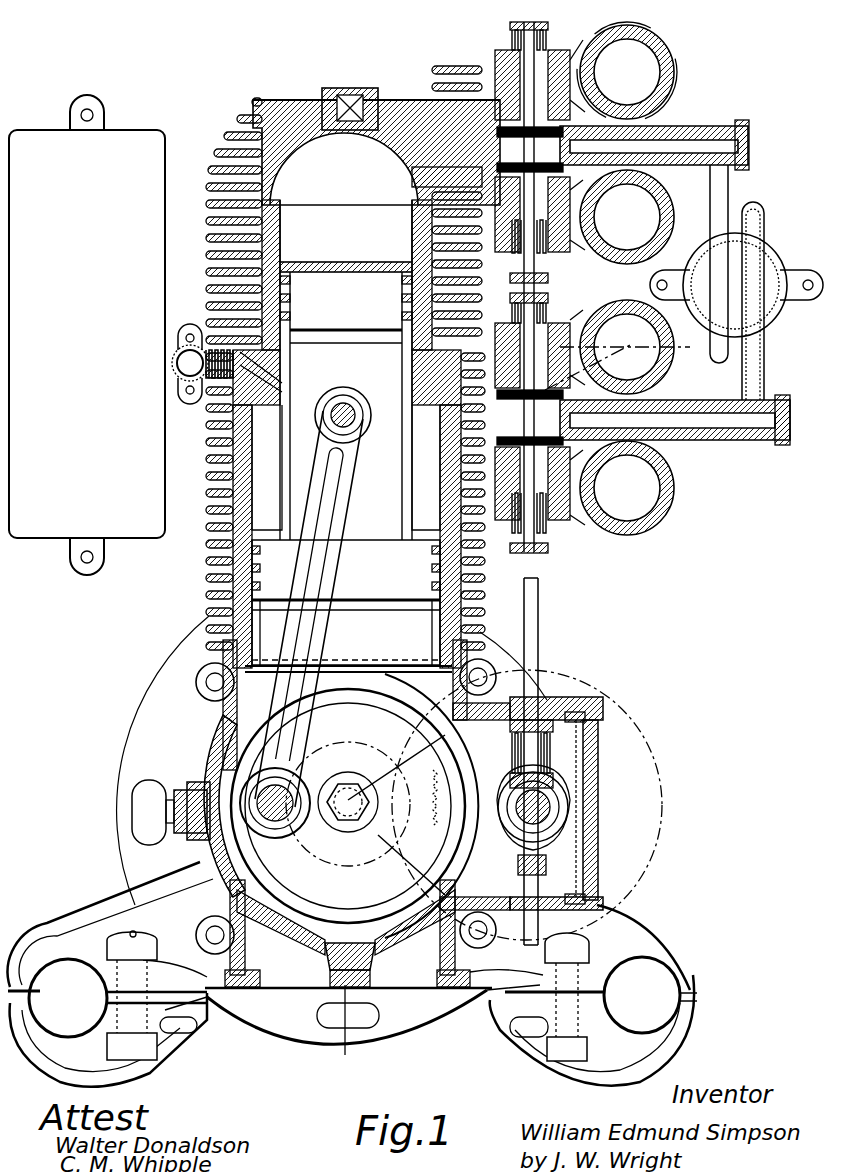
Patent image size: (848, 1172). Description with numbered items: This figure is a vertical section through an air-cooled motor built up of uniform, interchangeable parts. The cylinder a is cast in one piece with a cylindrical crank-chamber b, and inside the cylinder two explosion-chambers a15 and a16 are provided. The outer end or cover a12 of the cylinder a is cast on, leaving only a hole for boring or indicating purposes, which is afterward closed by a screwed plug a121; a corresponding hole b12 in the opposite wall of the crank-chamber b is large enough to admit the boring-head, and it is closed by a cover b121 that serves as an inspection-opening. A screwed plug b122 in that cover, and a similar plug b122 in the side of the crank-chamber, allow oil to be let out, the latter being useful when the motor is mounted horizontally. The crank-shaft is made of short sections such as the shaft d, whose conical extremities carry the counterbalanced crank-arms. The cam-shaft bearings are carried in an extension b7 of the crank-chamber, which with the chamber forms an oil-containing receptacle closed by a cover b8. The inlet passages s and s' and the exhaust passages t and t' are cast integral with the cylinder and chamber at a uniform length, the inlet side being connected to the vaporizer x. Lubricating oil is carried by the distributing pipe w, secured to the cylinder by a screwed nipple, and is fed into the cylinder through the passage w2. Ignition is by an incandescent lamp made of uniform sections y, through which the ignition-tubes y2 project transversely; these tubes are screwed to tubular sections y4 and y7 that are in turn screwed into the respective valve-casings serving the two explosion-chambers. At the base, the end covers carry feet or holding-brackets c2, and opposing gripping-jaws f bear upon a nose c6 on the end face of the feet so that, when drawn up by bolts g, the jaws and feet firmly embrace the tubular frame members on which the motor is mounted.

The cylinder a is at (222, 152).
The outer end or cover of the cylinder a12 is at (262, 110).
The screwed plug a121 is at (340, 90).
The explosion-chamber a15 is at (346, 231).
The explosion-chamber a16 is at (348, 467).
The lubricating-oil-distributing pipe w is at (190, 335).
The passage w2 is at (215, 405).
The vaporizer x is at (190, 362).
The inlet passage s is at (586, 287).
The exhaust passage t is at (584, 223).
The inlet passage s' is at (592, 346).
The exhaust passage t' is at (584, 495).
The incandescent ignition-lamp section y is at (790, 245).
The ignition-tube y2 is at (755, 208).
The tubular section y4 is at (720, 135).
The tubular section y7 is at (700, 430).
The crank-chamber b is at (222, 714).
The hole b12 is at (250, 1000).
The cover b121 is at (410, 1000).
The screwed plug b122 is at (148, 812).
The extension of the crank-chamber b7 is at (545, 722).
The cover b8 is at (600, 805).
The crank-shaft section d is at (309, 803).
The bolt g is at (130, 947).
The feet or holding-brackets c2 is at (700, 945).
The gripping-jaws f is at (170, 1048).
The nose c6 is at (202, 1005).